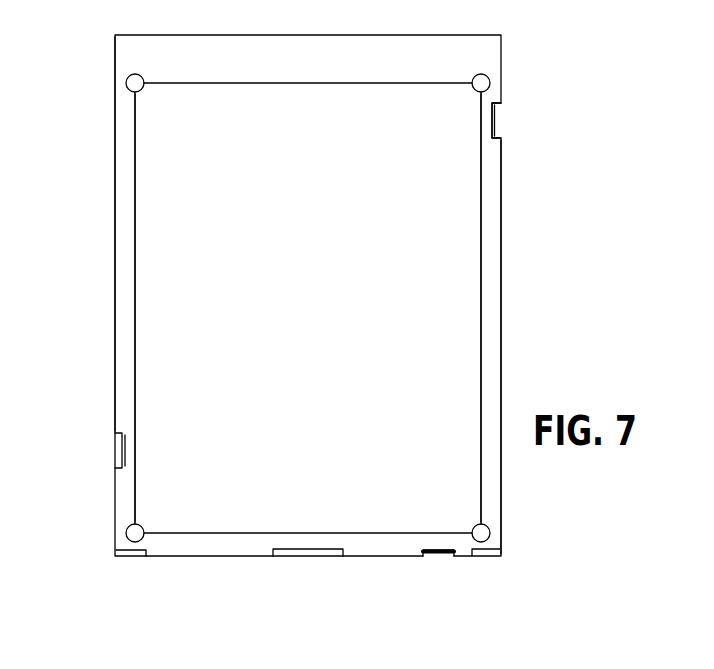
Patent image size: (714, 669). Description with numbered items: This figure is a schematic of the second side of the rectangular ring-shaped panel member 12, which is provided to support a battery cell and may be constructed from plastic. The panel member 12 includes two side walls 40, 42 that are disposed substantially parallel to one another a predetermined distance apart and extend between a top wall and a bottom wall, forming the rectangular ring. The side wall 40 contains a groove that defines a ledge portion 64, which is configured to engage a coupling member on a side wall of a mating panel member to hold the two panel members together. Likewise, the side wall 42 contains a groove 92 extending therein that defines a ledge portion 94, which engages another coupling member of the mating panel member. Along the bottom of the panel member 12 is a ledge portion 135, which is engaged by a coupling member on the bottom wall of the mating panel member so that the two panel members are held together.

The rectangular ring-shaped panel member 12 is at (540, 92).
The side wall 40 is at (490, 333).
The side wall 42 is at (125, 305).
The ledge portion 64 is at (496, 119).
The groove 92 is at (118, 457).
The ledge portion 94 is at (118, 448).
The ledge portion 135 is at (437, 557).